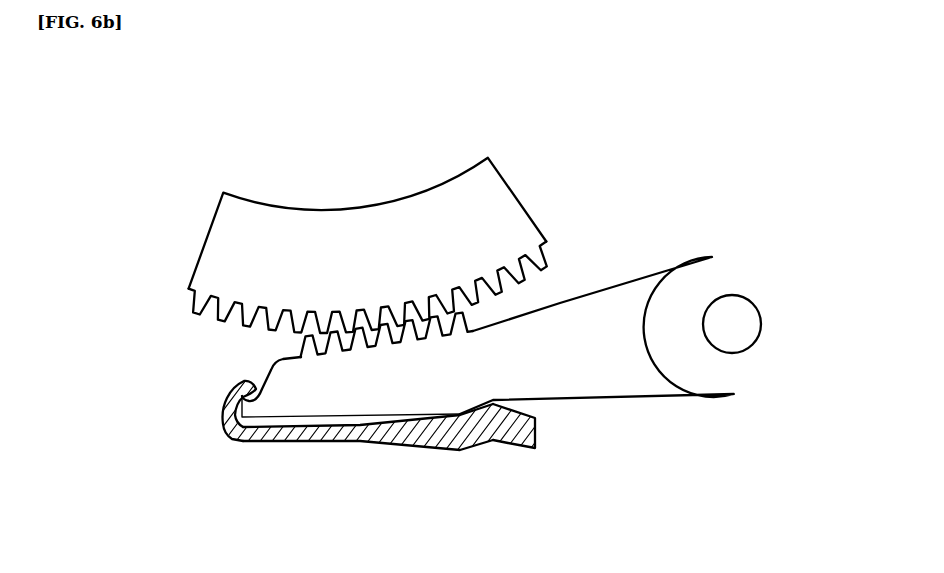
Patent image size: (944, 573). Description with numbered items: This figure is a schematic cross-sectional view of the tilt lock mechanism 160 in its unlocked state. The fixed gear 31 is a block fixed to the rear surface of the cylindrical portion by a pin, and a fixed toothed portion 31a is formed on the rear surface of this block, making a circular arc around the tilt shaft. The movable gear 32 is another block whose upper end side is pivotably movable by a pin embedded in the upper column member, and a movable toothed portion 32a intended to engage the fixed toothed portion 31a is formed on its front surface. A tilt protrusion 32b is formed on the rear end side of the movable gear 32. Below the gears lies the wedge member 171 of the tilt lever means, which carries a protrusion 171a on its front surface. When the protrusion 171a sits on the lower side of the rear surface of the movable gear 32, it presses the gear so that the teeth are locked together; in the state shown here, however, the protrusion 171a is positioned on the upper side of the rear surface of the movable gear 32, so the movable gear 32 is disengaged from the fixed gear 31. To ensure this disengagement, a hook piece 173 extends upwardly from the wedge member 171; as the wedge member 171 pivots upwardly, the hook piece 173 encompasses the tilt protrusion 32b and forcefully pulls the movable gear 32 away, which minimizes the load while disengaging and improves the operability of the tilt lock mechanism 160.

The tilt lock mechanism 160 is at (381, 88).
The fixed gear 31 is at (352, 217).
The fixed toothed portion 31a is at (190, 311).
The movable gear 32 is at (652, 287).
The movable toothed portion 32a is at (303, 348).
The tilt protrusion 32b is at (260, 398).
The wedge member 171 is at (512, 447).
The protrusion 171a is at (514, 409).
The hook piece 173 is at (223, 405).